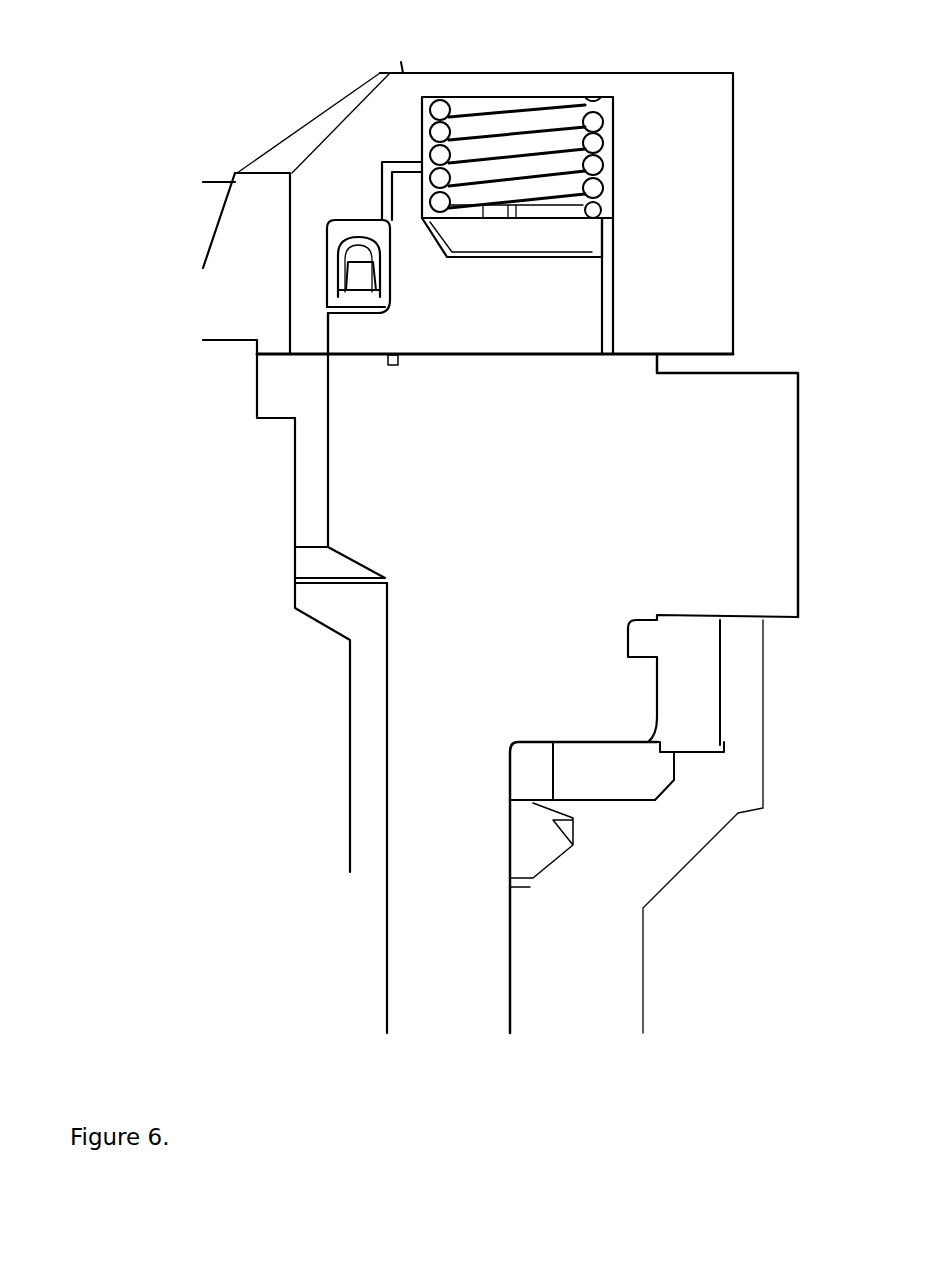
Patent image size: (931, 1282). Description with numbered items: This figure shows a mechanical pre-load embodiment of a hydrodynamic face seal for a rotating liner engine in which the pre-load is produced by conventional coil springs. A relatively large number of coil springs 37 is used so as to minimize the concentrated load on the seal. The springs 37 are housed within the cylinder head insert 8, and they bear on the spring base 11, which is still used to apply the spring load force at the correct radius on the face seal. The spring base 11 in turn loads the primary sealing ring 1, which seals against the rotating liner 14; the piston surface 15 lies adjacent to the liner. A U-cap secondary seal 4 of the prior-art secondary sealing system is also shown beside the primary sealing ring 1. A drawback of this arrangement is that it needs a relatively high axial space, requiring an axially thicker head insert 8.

The primary sealing ring 1 is at (500, 389).
The U-cap secondary seal 4 is at (352, 233).
The cylinder head insert 8 is at (485, 208).
The spring base 11 is at (560, 240).
The rotating liner 14 is at (592, 808).
The piston surface 15 is at (350, 678).
The springs 37 is at (555, 127).